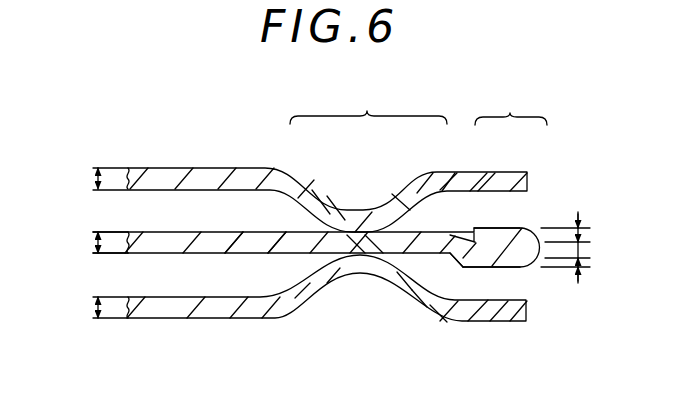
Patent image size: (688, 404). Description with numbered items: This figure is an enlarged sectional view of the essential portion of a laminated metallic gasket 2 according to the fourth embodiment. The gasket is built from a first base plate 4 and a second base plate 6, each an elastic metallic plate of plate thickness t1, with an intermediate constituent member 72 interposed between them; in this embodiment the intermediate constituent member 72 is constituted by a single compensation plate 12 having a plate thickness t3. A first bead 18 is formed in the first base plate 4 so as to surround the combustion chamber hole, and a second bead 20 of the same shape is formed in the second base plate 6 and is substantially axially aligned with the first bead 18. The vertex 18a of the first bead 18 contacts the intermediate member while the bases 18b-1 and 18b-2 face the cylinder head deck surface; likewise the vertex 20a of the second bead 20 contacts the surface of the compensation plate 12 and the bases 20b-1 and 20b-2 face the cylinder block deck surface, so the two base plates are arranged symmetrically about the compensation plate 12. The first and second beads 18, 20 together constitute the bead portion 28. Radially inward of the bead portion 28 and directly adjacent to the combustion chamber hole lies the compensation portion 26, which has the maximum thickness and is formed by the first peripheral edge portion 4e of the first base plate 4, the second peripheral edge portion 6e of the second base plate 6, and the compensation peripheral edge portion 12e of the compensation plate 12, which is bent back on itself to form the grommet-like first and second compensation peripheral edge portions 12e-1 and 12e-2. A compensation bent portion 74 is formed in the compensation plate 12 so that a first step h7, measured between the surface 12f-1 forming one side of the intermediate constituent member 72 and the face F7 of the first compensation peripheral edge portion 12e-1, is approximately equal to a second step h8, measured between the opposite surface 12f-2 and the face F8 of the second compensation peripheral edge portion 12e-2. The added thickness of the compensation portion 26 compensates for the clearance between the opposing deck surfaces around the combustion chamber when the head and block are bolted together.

The laminated metallic gasket 2 is at (214, 152).
The first base plate 4 is at (183, 165).
The second base plate 6 is at (157, 296).
The compensation plate 12 is at (160, 230).
The first bead 18 is at (366, 210).
The vertex of the first bead 18a is at (350, 235).
The base of the first bead 18b-1 is at (420, 176).
The base of the first bead 18b-2 is at (306, 176).
The second bead 20 is at (365, 274).
The vertex of the second bead 20a is at (360, 250).
The base of the second bead 20b-1 is at (423, 318).
The base of the second bead 20b-2 is at (298, 318).
The compensation portion 26 is at (511, 109).
The bead portion 28 is at (368, 108).
The intermediate constituent member 72 is at (100, 224).
The compensation bent portion 74 is at (463, 268).
The first peripheral edge portion 4e is at (509, 173).
The second peripheral edge portion 6e is at (503, 313).
The compensation peripheral edge portion 12e is at (480, 247).
The first compensation peripheral edge portion 12e-1 is at (518, 226).
The second compensation peripheral edge portion 12e-2 is at (512, 268).
The surface of the compensation plate 12f-1 is at (240, 227).
The surface of the compensation plate 12f-2 is at (238, 257).
The plate thickness t1 is at (94, 308).
The plate thickness t3 is at (94, 244).
The first step h7 is at (594, 216).
The second step h8 is at (594, 286).
The face of the first compensation peripheral edge portion F7 is at (500, 222).
The face of the second compensation peripheral edge portion F8 is at (506, 274).